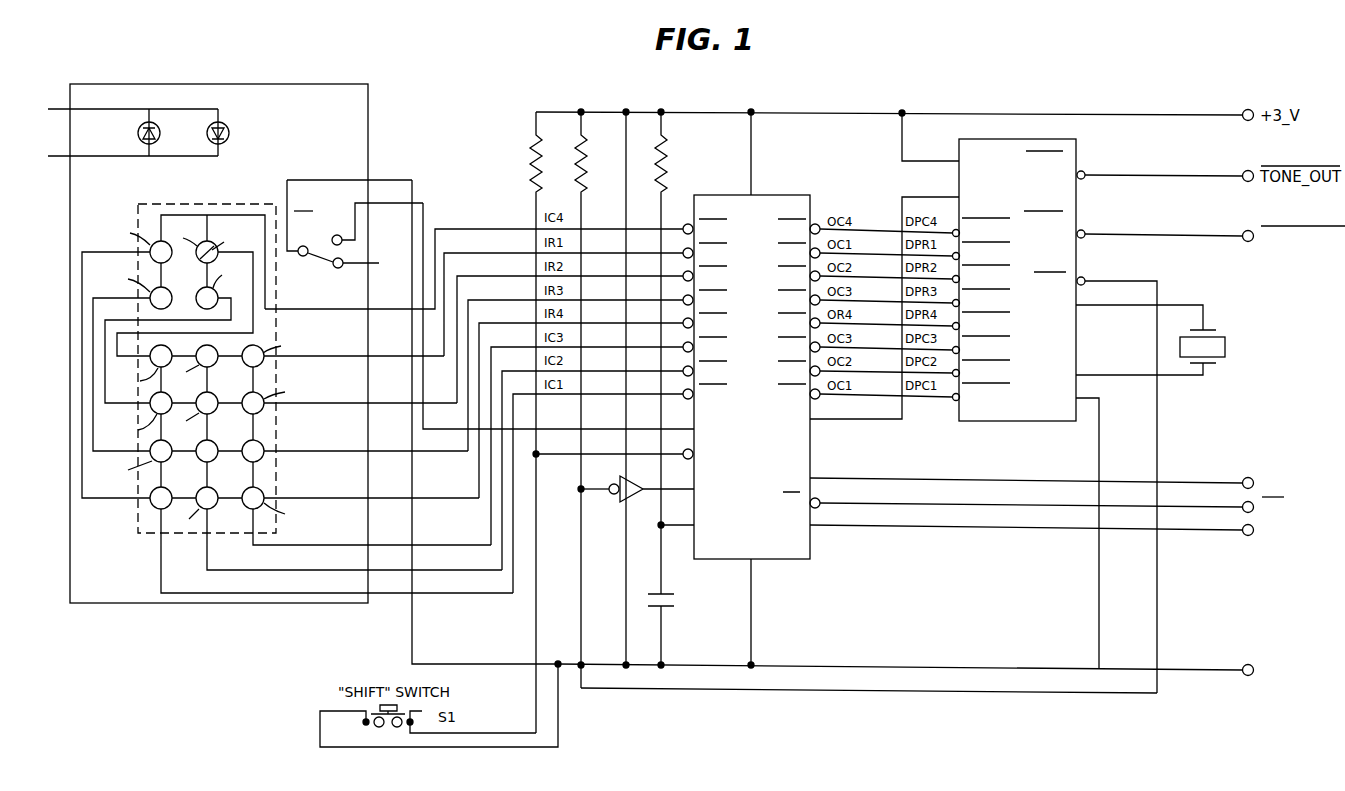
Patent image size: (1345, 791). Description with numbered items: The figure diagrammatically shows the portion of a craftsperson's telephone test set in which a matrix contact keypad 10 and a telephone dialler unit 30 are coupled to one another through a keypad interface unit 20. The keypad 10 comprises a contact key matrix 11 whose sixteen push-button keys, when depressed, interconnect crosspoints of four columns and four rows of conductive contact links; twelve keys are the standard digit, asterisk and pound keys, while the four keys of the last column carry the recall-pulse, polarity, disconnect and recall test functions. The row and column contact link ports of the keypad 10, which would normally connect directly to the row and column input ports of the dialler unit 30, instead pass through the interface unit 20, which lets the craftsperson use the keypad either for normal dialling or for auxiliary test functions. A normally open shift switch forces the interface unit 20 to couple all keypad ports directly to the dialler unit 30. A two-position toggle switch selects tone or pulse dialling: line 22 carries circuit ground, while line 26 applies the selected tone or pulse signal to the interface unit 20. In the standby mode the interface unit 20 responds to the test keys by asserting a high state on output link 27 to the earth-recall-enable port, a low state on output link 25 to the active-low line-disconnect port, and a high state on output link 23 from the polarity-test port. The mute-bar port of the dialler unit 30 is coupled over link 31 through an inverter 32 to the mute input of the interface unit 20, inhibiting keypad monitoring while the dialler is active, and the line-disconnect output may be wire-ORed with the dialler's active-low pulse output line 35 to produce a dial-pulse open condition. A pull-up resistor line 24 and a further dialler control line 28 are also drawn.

The matrix contact keypad 10 is at (368, 110).
The contact key matrix 11 is at (206, 203).
The keypad interface unit 20 is at (786, 195).
The ground line 22 is at (388, 180).
The PTEST output link 23 is at (1192, 482).
The pull-up resistor line 24 is at (581, 610).
The LD-BAR output link 25 is at (966, 505).
The tone/pulse input line 26 is at (545, 430).
The ERENB output link 27 is at (966, 528).
The TPS0 line 28 is at (847, 421).
The telephone dialler unit 30 is at (1081, 147).
The mute link 31 is at (1000, 690).
The inverter 32 is at (624, 498).
The PULSE_OUT line 35 is at (1138, 235).